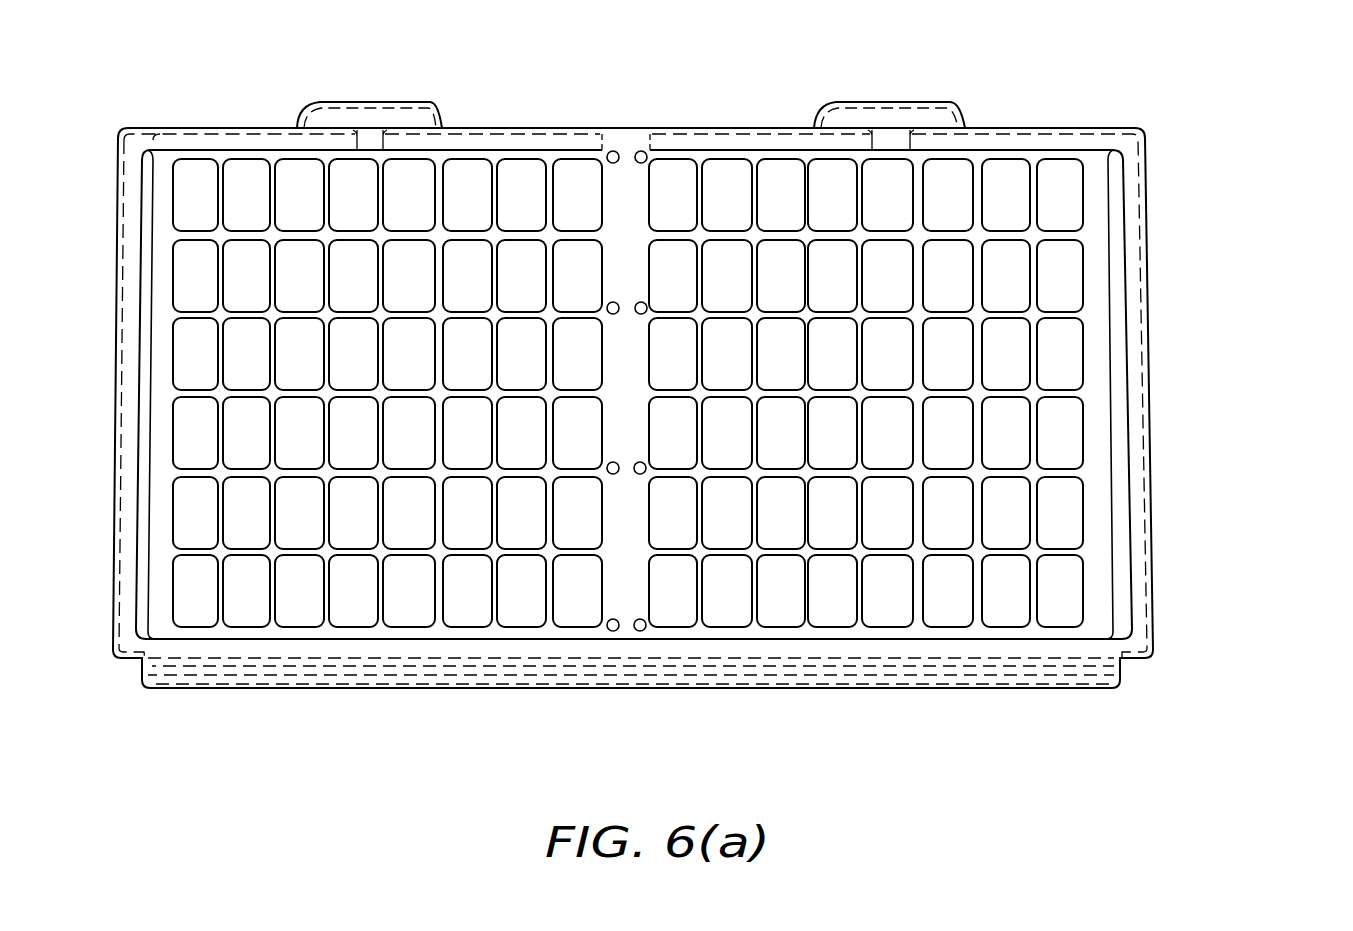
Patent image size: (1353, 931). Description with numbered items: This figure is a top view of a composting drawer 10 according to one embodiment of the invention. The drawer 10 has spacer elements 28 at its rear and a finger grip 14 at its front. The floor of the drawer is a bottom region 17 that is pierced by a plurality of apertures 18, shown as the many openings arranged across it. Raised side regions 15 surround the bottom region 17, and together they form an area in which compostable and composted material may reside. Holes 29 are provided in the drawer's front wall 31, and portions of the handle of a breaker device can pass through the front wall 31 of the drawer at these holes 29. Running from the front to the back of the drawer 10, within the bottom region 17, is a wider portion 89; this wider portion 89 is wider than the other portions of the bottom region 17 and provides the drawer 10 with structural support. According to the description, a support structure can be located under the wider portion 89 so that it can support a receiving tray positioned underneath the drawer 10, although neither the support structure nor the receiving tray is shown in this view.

The drawer 10 is at (1276, 414).
The finger grip 14 is at (764, 692).
The raised side regions 15 is at (1140, 263).
The bottom region 17 is at (1100, 543).
The apertures 18 is at (1060, 350).
The spacer elements 28 is at (383, 112).
The holes 29 is at (367, 140).
The front wall 31 is at (535, 140).
The wider portion 89 is at (628, 195).